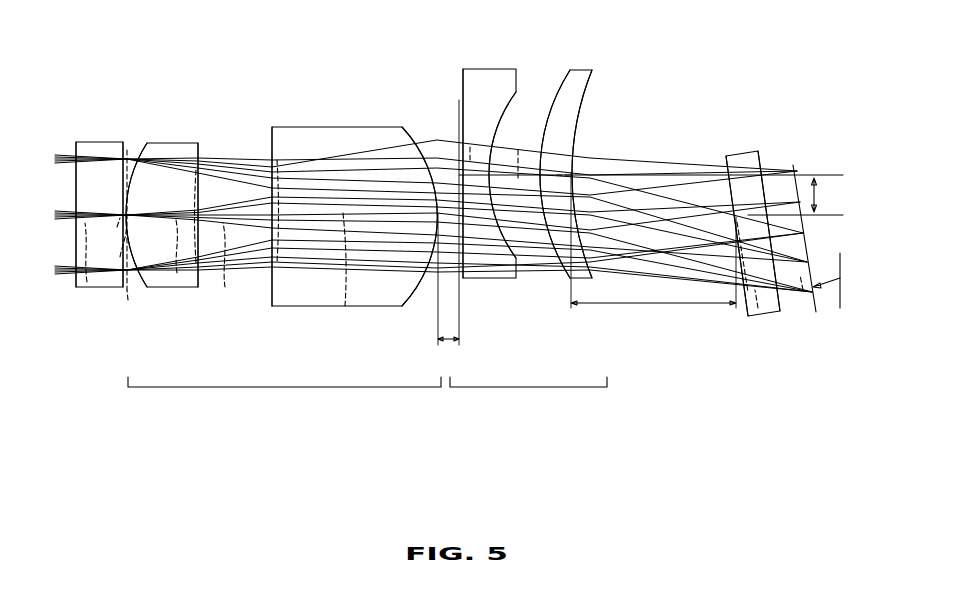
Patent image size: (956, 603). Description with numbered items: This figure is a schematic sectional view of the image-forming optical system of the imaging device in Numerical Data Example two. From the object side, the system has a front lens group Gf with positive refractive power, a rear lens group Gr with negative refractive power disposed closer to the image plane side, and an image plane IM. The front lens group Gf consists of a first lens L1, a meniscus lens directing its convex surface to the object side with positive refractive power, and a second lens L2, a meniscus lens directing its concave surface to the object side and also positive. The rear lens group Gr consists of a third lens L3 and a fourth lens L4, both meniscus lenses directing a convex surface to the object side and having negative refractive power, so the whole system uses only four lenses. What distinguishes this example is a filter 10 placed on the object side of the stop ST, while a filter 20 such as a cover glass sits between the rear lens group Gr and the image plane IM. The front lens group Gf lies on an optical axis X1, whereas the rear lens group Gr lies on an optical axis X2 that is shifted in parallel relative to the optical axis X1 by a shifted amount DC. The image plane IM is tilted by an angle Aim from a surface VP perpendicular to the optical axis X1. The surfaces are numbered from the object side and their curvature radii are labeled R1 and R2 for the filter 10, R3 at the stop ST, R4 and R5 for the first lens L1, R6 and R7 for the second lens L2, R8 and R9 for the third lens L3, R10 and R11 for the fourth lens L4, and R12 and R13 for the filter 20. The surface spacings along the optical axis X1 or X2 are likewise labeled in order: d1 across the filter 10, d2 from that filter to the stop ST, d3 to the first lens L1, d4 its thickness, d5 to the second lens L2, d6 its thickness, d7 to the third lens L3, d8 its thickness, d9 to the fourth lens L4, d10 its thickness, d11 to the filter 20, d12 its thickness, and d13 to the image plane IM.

The filter 10 is at (97, 148).
The filter 20 is at (742, 160).
The stop ST is at (135, 147).
The first lens L1 is at (173, 148).
The second lens L2 is at (330, 132).
The third lens L3 is at (485, 75).
The fourth lens L4 is at (585, 75).
The curvature radius of first surface R1 is at (73, 148).
The curvature radius of second surface R2 is at (122, 147).
The curvature radius of third surface R3 is at (120, 257).
The curvature radius of fourth surface R4 is at (147, 148).
The curvature radius of fifth surface R5 is at (198, 157).
The curvature radius of sixth surface R6 is at (268, 170).
The curvature radius of seventh surface R7 is at (417, 140).
The curvature radius of eighth surface R8 is at (459, 97).
The curvature radius of ninth surface R9 is at (506, 108).
The curvature radius of tenth surface R10 is at (558, 90).
The curvature radius of eleventh surface R11 is at (588, 108).
The curvature radius of twelfth surface R12 is at (716, 170).
The curvature radius of thirteenth surface R13 is at (763, 158).
The first surface spacing d1 is at (87, 282).
The second surface spacing d2 is at (117, 227).
The third surface spacing d3 is at (128, 300).
The fourth surface spacing d4 is at (177, 273).
The fifth surface spacing d5 is at (225, 287).
The sixth surface spacing d6 is at (345, 306).
The seventh surface spacing d7 is at (450, 222).
The eighth surface spacing d8 is at (470, 147).
The ninth surface spacing d9 is at (518, 150).
The tenth surface spacing d10 is at (557, 175).
The eleventh surface spacing d11 is at (653, 240).
The twelfth surface spacing d12 is at (758, 308).
The thirteenth surface spacing d13 is at (803, 290).
The image plane IM is at (791, 160).
The optical axis of front lens group X1 is at (837, 217).
The optical axis of rear lens group X2 is at (823, 173).
The shifted amount DC is at (830, 195).
The angle Aim is at (826, 263).
The surface perpendicular to optical axis VP is at (840, 308).
The front lens group Gf is at (284, 394).
The rear lens group Gr is at (528, 394).